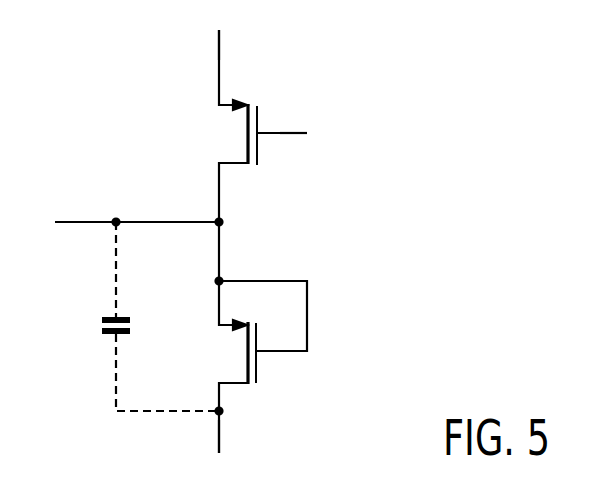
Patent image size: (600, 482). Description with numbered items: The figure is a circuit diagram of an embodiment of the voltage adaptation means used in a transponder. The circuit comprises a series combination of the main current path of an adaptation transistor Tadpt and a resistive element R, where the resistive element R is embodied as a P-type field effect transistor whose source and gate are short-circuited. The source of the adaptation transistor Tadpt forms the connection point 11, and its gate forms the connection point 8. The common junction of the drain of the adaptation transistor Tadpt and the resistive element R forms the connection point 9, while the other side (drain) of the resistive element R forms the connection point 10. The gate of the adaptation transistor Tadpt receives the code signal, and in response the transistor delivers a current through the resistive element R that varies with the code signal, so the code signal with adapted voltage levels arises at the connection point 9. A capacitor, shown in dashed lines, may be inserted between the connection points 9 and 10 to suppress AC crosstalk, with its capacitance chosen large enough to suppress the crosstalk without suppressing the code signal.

The connection point 8 is at (303, 131).
The connection point 9 is at (64, 220).
The connection point 10 is at (220, 448).
The connection point 11 is at (220, 41).
The adaptation transistor Tadpt is at (227, 133).
The resistive element R is at (226, 352).